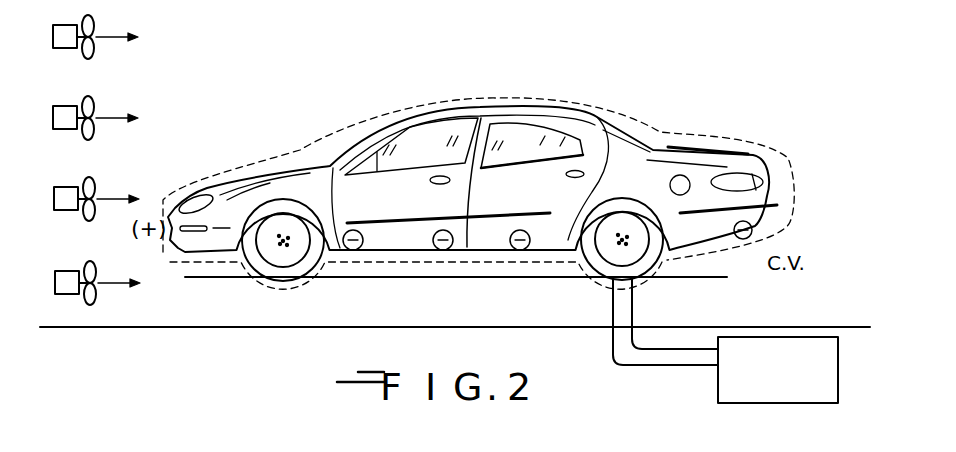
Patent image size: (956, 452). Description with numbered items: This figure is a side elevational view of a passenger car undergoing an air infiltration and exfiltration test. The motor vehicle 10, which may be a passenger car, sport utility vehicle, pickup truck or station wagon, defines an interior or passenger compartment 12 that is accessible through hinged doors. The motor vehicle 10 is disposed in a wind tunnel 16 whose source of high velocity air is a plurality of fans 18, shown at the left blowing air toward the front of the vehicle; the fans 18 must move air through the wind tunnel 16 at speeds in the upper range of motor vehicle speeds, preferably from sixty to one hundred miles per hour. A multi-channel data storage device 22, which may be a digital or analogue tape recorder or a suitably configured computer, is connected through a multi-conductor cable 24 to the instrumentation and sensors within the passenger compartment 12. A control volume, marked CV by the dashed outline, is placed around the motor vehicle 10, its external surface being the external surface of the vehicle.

The motor vehicle 10 is at (706, 138).
The passenger compartment 12 is at (445, 164).
The wind tunnel 16 is at (237, 2).
The fans 18 is at (96, 50).
The multi-channel data storage device 22 is at (717, 390).
The multi-conductor cable 24 is at (613, 342).